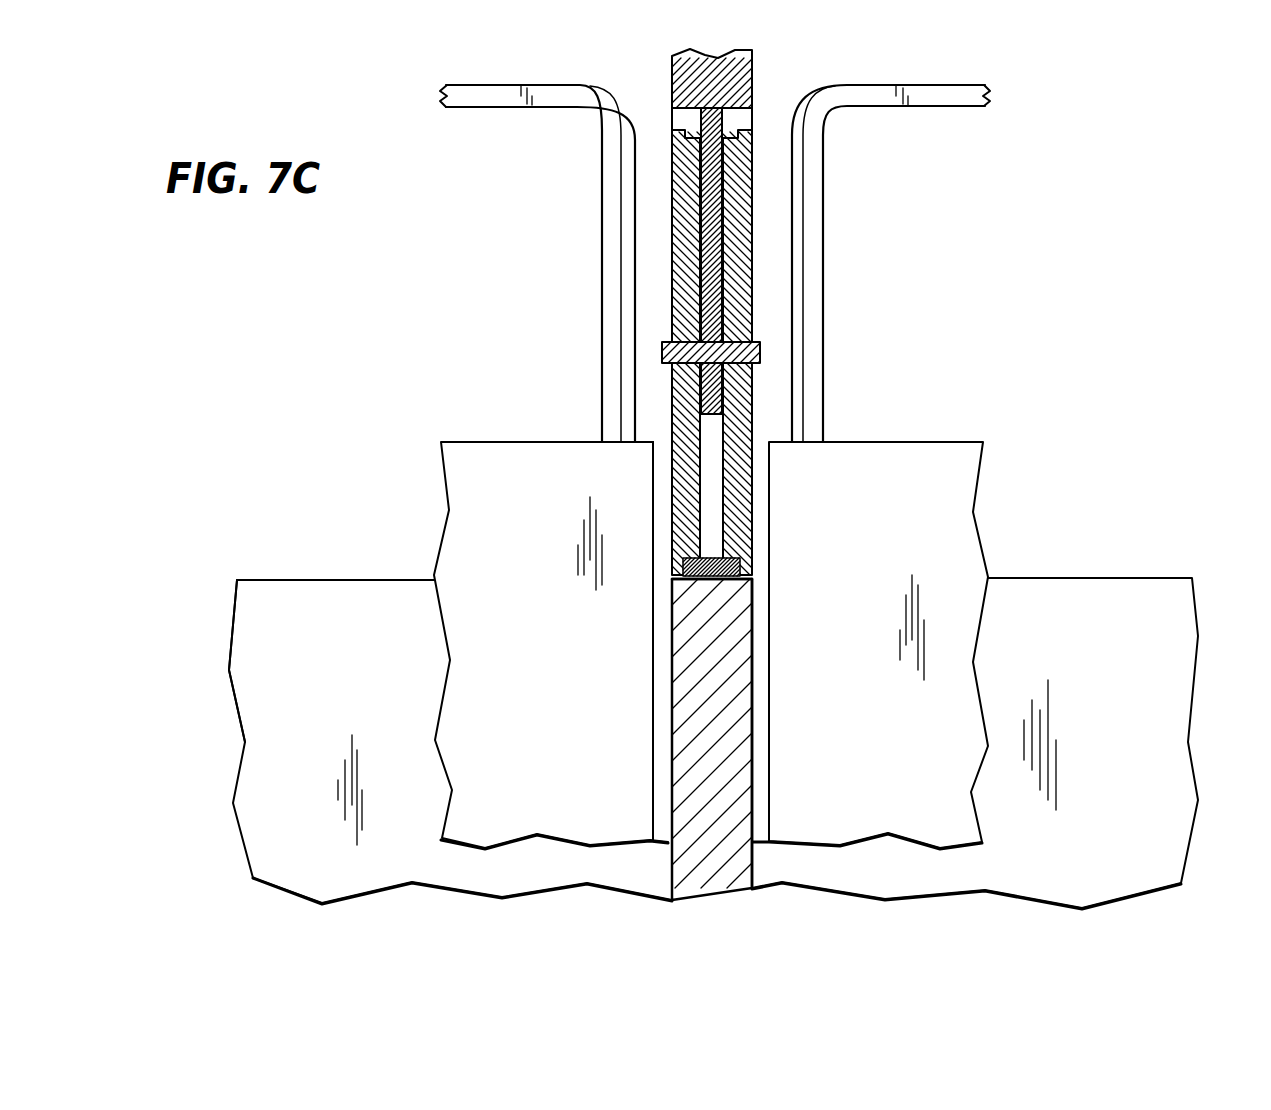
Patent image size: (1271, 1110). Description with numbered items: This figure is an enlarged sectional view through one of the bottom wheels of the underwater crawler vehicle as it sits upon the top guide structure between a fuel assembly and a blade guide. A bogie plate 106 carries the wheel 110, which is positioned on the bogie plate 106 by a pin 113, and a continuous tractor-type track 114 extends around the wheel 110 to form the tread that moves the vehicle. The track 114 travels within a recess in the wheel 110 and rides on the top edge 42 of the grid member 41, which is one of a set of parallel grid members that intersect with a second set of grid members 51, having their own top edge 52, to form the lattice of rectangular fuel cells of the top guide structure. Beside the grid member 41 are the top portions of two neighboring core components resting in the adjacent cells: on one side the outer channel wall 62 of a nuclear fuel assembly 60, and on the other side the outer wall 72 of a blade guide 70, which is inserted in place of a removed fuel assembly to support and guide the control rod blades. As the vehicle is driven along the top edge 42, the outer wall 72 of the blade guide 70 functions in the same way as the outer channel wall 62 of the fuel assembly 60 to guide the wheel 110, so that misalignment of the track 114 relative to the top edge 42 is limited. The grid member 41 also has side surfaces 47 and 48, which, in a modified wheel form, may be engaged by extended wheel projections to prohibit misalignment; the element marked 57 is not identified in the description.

The grid member 41 is at (718, 793).
The top edge 42 is at (698, 582).
The side surface 47 is at (753, 723).
The side surface 48 is at (672, 755).
The grid member 51 is at (224, 711).
The top edge 52 is at (284, 580).
The substrate block 57 is at (363, 682).
The nuclear fuel assembly 60 is at (412, 400).
The outer channel wall 62 is at (548, 544).
The blade guide 70 is at (1002, 395).
The outer wall 72 is at (883, 597).
The bogie plate 106 is at (672, 91).
The wheel 110 is at (753, 178).
The pin 113 is at (760, 350).
The track 114 is at (725, 560).